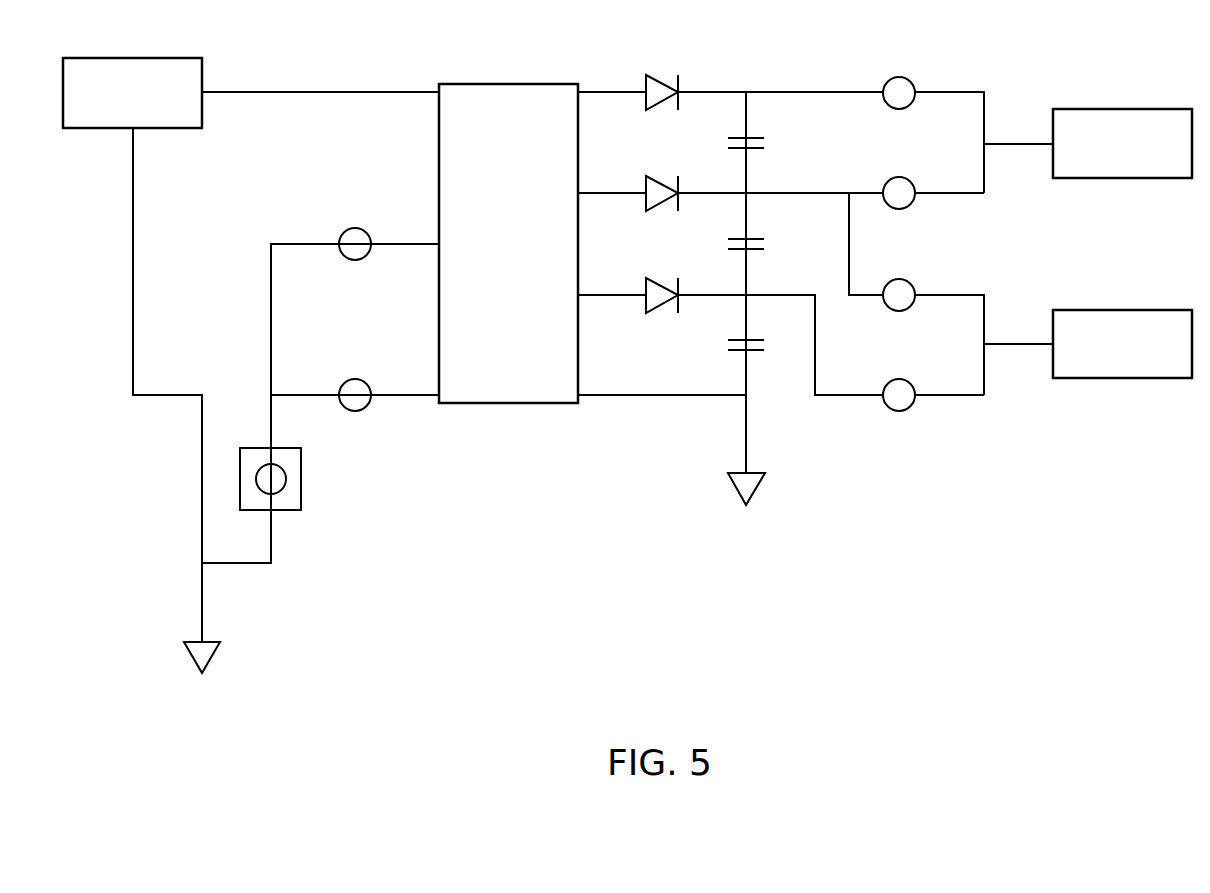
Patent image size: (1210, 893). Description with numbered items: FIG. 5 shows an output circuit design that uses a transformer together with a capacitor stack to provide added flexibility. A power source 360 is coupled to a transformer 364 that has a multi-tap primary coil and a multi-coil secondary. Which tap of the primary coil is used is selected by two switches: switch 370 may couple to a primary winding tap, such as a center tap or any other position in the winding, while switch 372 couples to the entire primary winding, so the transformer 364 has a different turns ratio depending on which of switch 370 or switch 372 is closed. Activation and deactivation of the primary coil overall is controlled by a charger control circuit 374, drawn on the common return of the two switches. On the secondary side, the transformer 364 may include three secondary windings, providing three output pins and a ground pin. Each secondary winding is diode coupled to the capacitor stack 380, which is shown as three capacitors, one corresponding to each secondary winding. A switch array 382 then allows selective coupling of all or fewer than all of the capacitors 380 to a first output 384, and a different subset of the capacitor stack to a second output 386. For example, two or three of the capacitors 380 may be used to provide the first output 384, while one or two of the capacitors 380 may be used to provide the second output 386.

The power source 360 is at (132, 58).
The transformer 364 is at (508, 84).
The switch 370 is at (352, 228).
The switch 372 is at (352, 379).
The charger control circuit 374 is at (286, 479).
The capacitor stack 380 is at (782, 65).
The switch array 382 is at (935, 65).
The first output 384 is at (1122, 109).
The second output 386 is at (1122, 310).